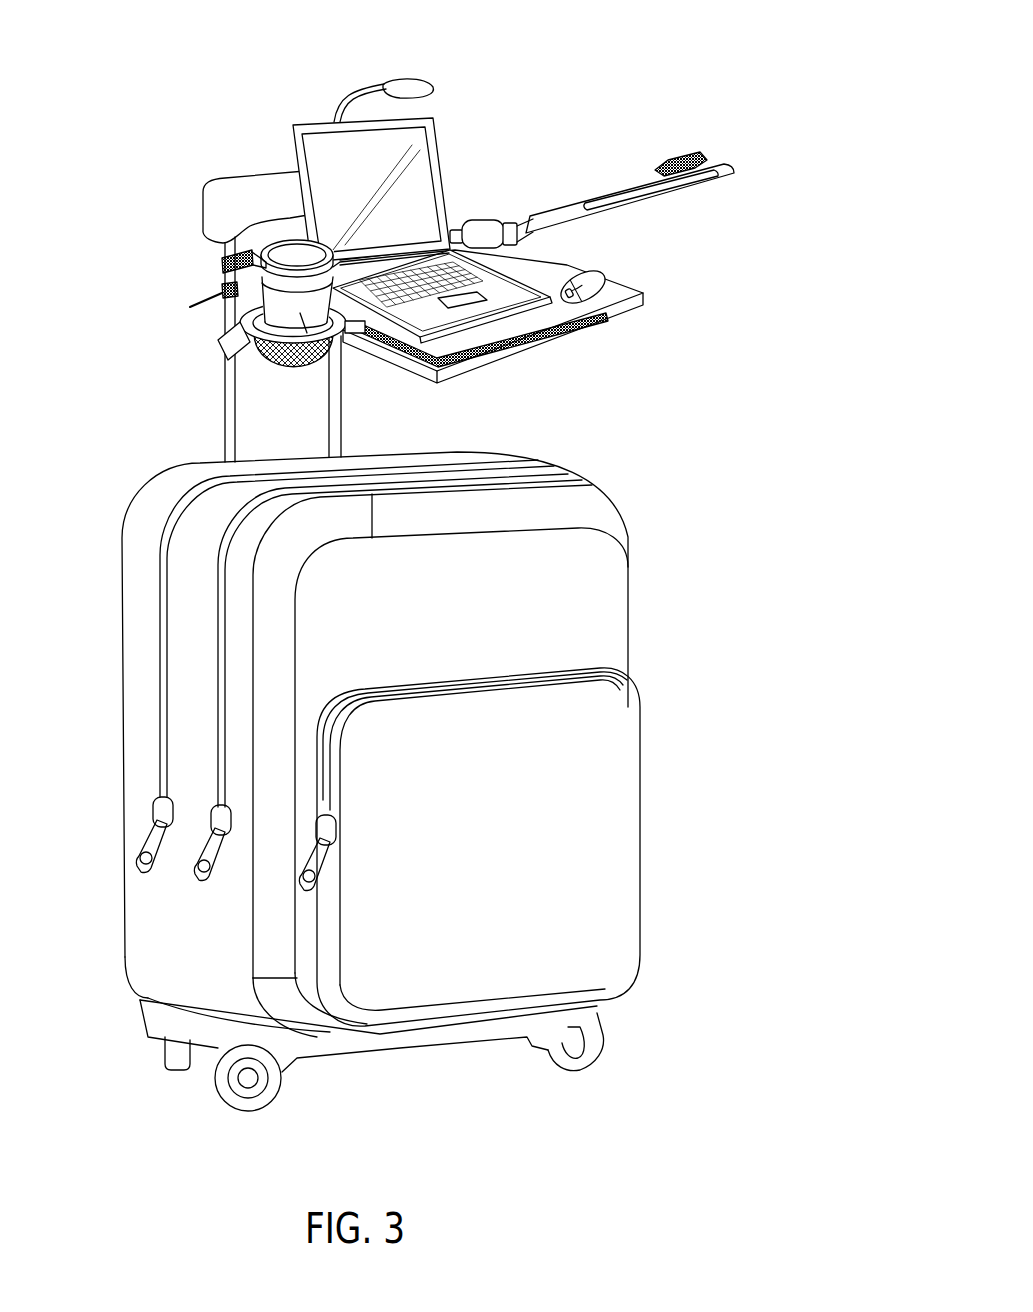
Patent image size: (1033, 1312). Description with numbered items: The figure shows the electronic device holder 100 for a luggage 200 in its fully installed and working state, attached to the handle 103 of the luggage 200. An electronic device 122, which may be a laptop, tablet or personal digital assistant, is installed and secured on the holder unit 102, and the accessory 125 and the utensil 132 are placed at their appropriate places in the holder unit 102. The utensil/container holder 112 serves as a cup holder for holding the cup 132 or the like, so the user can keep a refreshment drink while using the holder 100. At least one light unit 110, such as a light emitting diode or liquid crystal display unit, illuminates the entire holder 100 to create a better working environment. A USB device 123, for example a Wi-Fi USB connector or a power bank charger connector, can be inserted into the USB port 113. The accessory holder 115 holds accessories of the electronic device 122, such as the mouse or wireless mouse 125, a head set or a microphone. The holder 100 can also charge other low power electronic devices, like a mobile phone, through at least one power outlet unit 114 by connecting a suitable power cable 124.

The electronic device holder 100 is at (423, 225).
The holder unit 102 is at (496, 331).
The handle 103 is at (241, 201).
The light unit 110 is at (413, 86).
The utensil/container holder 112 is at (253, 353).
The USB port 113 is at (226, 265).
The power outlet unit 114 is at (477, 221).
The accessory holder 115 is at (622, 298).
The electronic device 122 is at (428, 200).
The USB device 123 is at (200, 300).
The power cable 124 is at (556, 212).
The accessory 125 is at (593, 285).
The utensil 132 is at (333, 352).
The luggage 200 is at (442, 616).